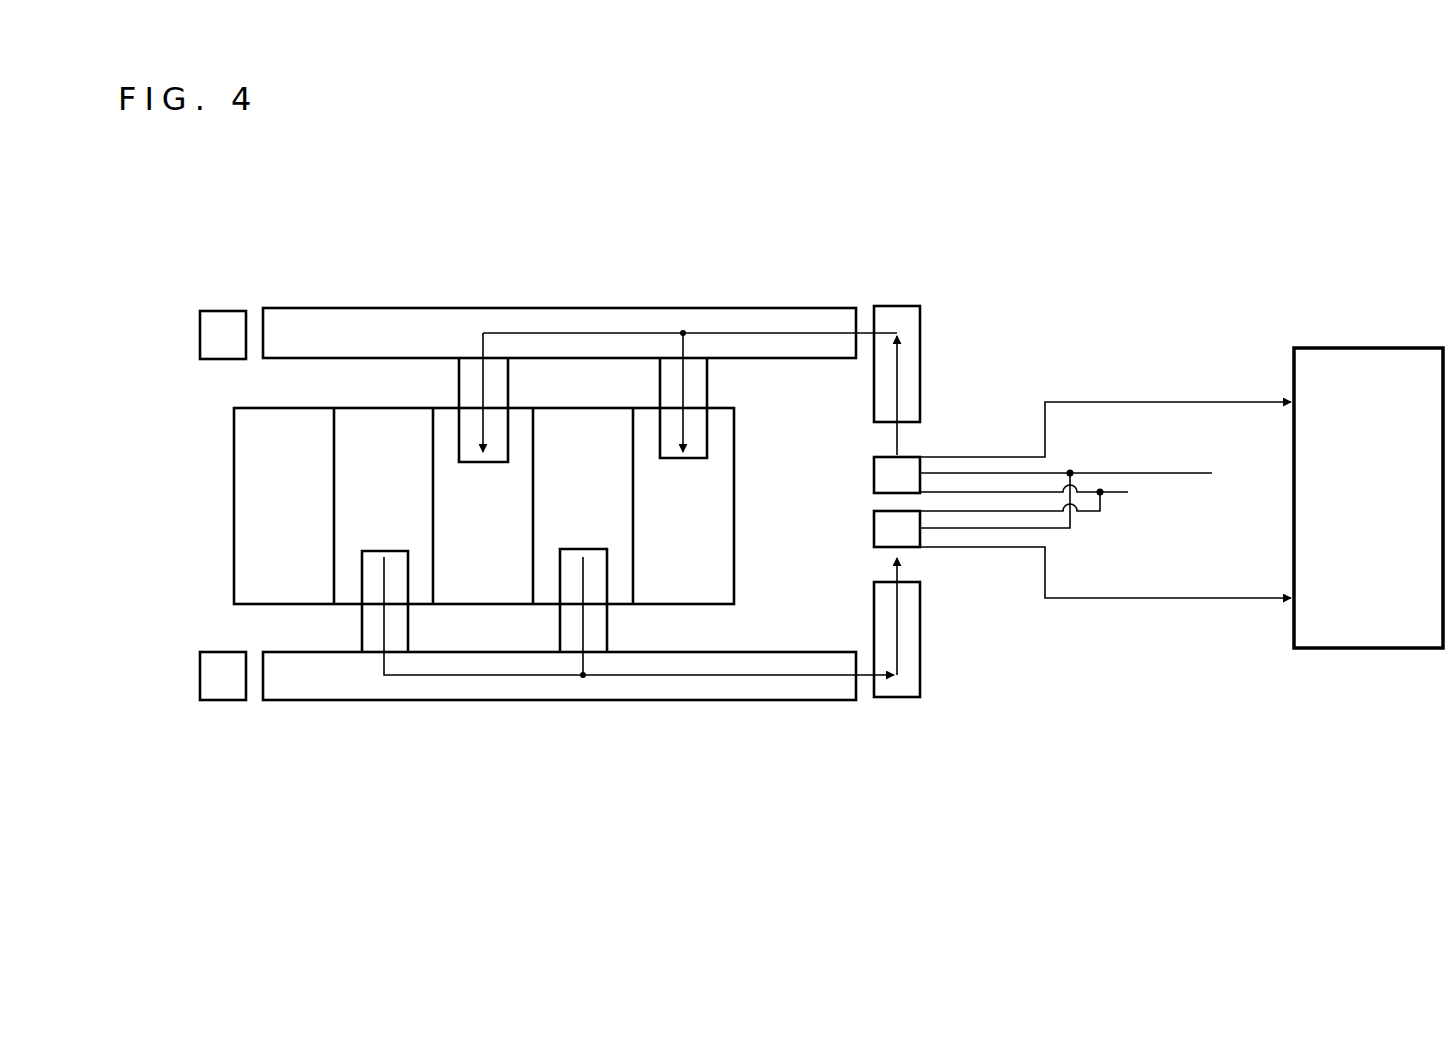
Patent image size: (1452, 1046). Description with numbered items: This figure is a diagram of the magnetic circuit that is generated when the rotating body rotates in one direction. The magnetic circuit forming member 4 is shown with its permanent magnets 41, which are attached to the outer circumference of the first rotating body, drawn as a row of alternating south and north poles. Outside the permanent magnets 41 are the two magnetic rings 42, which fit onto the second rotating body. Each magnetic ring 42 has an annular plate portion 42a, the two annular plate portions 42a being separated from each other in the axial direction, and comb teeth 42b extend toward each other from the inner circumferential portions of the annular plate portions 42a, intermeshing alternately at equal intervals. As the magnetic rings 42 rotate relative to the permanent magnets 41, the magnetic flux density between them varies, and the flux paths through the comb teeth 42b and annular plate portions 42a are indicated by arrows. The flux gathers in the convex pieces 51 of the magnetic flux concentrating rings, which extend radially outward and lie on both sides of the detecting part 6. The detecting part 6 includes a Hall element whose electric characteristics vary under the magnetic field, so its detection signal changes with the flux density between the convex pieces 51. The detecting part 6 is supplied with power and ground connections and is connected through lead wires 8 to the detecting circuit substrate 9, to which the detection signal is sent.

The magnetic circuit forming member 4 is at (325, 266).
The permanent magnets 41 is at (234, 475).
The magnetic rings 42 is at (495, 306).
The annular plate portions 42a is at (692, 308).
The comb teeth 42b is at (459, 380).
The convex pieces 51 is at (920, 340).
The detecting part 6 is at (910, 457).
The lead wires 8 is at (1172, 402).
The detecting circuit substrate 9 is at (1357, 348).